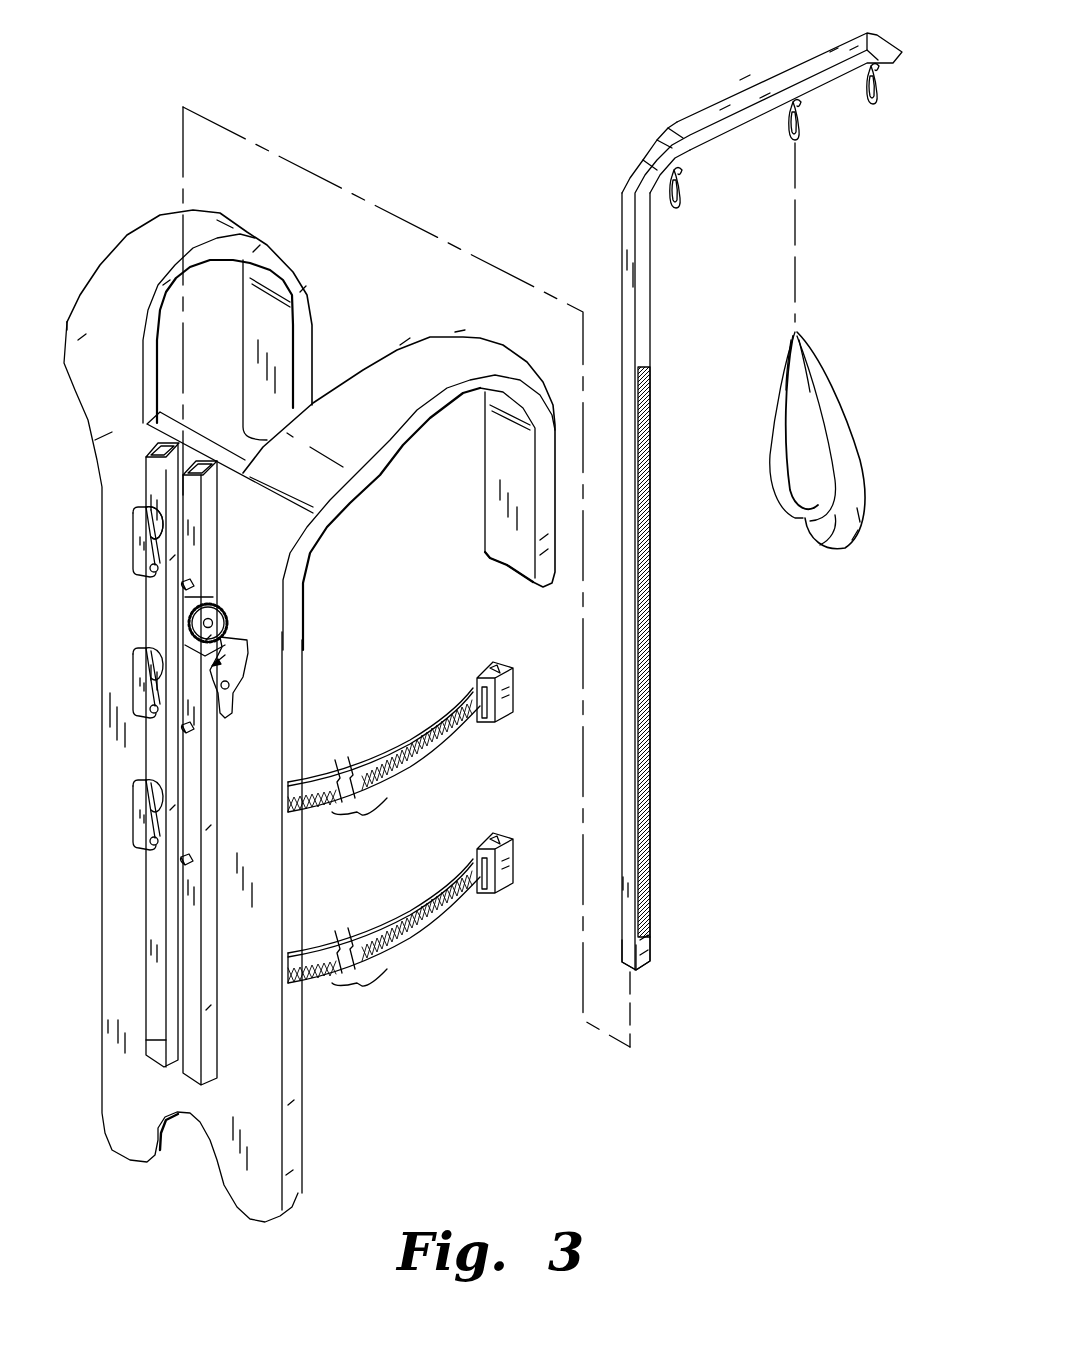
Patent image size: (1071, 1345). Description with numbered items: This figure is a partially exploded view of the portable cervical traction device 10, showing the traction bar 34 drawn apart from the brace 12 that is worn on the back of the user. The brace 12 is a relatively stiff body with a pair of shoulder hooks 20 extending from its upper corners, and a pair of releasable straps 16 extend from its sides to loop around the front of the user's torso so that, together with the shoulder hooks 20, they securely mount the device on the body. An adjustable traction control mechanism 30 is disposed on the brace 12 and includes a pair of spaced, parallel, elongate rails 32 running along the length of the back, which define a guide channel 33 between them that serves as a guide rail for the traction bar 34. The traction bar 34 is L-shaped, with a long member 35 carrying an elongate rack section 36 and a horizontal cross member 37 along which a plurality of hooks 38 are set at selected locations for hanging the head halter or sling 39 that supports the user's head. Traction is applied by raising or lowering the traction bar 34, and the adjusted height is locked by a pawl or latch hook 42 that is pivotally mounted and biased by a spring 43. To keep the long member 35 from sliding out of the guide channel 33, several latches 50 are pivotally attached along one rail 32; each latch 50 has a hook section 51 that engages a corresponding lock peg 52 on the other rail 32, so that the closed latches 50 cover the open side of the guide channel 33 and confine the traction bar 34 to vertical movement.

The portable cervical traction device 10 is at (421, 118).
The brace 12 is at (52, 543).
The releasable straps 16 is at (443, 710).
The shoulder hooks 20 is at (118, 262).
The adjustable traction control mechanism 30 is at (117, 325).
The rails 32 is at (150, 887).
The guide channel 33 is at (160, 1036).
The traction bar 34 is at (612, 133).
The long member 35 is at (627, 917).
The rack section 36 is at (650, 790).
The cross member 37 is at (787, 73).
The hooks 38 is at (882, 108).
The head halter or sling 39 is at (830, 382).
The pawl or latch hook 42 is at (233, 667).
The spring 43 is at (233, 700).
The latches 50 is at (140, 565).
The hook section 51 is at (162, 510).
The lock pegs, dowels or posts 52 is at (192, 727).